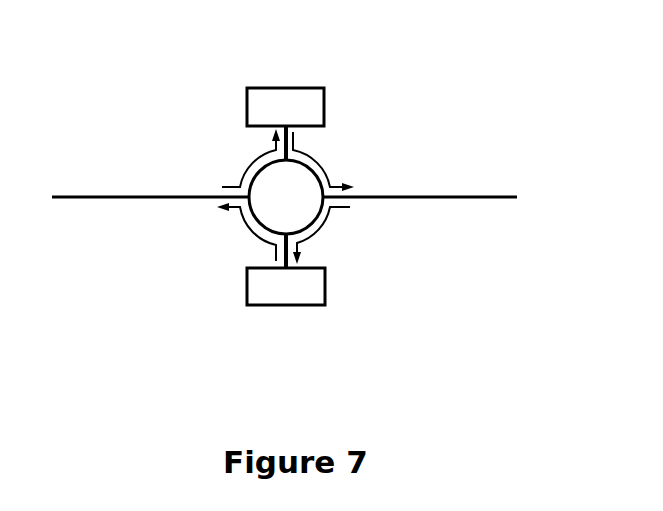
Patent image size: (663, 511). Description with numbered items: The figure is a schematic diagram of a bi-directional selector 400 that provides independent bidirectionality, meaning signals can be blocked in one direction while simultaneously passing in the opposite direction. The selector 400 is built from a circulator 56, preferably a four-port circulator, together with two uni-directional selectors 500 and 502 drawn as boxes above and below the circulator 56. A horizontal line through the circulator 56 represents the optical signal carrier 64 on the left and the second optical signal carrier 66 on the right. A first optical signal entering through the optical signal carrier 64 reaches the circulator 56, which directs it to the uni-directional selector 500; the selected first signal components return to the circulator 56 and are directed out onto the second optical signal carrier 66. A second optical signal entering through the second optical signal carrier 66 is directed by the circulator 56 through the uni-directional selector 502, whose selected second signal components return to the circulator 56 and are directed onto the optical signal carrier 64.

The circulator 56 is at (302, 210).
The optical signal carrier 64 is at (165, 195).
The second optical signal carrier 66 is at (470, 194).
The bi-directional selector 400 is at (190, 247).
The uni-directional selector 500 is at (293, 87).
The uni-directional selector 502 is at (290, 306).